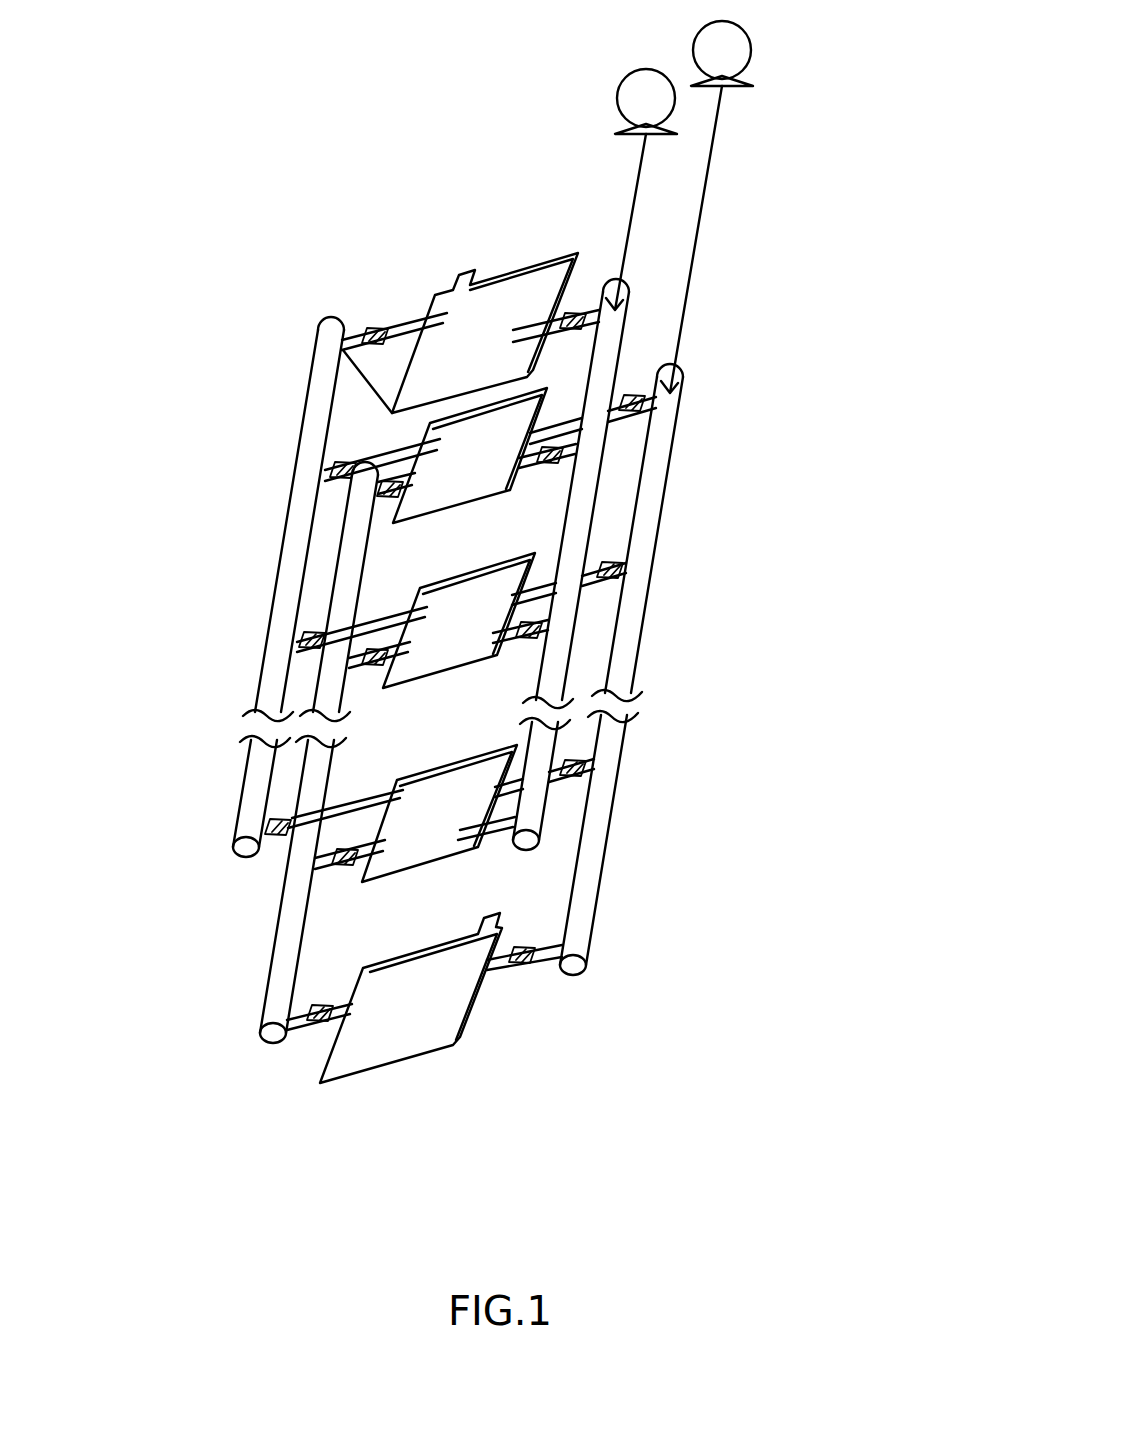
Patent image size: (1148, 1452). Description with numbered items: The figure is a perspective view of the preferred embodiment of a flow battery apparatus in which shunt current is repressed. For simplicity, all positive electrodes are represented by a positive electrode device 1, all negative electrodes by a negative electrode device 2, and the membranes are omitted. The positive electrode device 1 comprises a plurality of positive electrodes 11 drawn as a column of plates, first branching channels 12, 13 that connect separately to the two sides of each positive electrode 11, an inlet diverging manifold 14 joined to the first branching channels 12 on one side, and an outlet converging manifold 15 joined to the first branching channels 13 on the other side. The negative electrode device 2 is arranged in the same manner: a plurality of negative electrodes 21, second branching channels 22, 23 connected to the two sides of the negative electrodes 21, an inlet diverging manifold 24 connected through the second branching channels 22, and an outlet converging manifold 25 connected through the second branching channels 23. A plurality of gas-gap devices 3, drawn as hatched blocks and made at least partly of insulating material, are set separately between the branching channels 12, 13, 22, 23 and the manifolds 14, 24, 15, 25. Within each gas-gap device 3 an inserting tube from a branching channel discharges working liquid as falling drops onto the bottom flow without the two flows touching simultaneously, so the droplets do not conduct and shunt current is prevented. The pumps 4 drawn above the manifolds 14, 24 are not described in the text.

The positive electrode device 1 is at (488, 254).
The negative electrode device 2 is at (382, 1078).
The gas-gap device 3 is at (373, 330).
The pump 4 is at (646, 98).
The positive electrode 11 is at (552, 272).
The first branching channel 12 is at (563, 330).
The first branching channel 13 is at (413, 327).
The inlet diverging manifold 14 is at (613, 340).
The outlet converging manifold 15 is at (325, 378).
The negative electrode 21 is at (462, 1048).
The second branching channel 22 is at (516, 966).
The second branching channel 23 is at (312, 1022).
The inlet diverging manifold 24 is at (582, 918).
The outlet converging manifold 25 is at (280, 987).